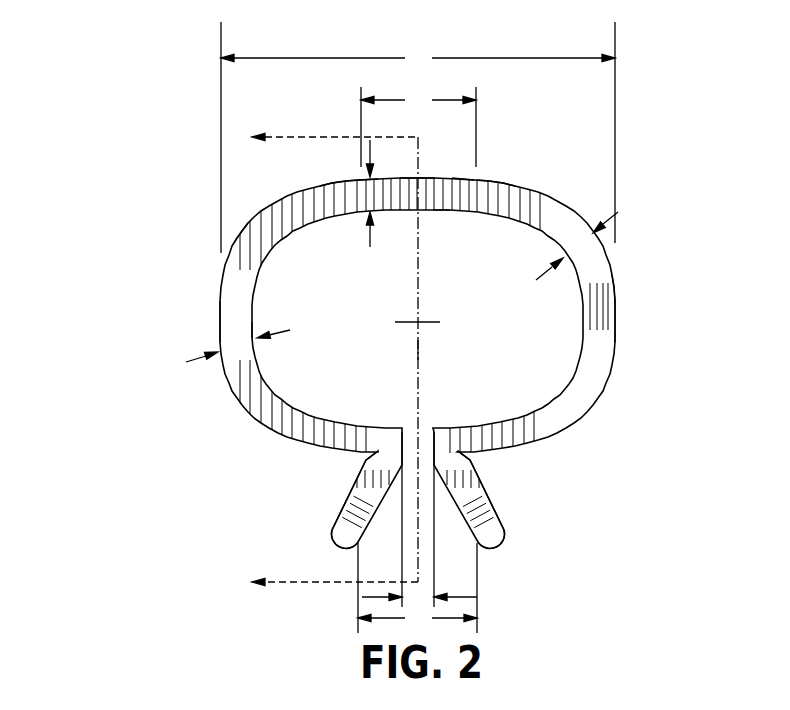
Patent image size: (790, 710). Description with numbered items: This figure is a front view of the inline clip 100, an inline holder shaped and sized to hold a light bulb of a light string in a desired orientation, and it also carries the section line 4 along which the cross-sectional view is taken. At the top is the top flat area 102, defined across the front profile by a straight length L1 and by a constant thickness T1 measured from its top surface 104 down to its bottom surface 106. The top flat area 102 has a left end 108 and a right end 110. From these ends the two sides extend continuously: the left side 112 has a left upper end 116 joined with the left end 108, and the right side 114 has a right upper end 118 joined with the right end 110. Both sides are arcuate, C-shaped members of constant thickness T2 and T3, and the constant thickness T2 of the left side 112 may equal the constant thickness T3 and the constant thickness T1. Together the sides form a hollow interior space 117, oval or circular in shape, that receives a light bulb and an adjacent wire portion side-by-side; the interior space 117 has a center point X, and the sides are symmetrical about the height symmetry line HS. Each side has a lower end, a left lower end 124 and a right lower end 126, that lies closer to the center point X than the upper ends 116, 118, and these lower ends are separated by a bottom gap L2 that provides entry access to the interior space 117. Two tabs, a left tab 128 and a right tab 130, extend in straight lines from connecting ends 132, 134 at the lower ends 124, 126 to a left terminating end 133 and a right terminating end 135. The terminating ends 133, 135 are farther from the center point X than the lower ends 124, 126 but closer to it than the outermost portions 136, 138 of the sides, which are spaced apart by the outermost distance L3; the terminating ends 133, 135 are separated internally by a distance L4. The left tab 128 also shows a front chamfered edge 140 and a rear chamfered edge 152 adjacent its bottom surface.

The inline clip 100 is at (100, 96).
The top flat area 102 is at (433, 164).
The top surface 104 is at (453, 177).
The bottom surface 106 is at (442, 212).
The left end 108 is at (360, 177).
The right end 110 is at (480, 177).
The left side 112 is at (235, 297).
The right side 114 is at (603, 290).
The left upper end 116 is at (357, 176).
The hollow interior space 117 is at (348, 330).
The right upper end 118 is at (485, 178).
The left lower end 124 is at (364, 447).
The right lower end 126 is at (472, 447).
The left tab 128 is at (360, 490).
The right tab 130 is at (476, 490).
The connecting end 132 is at (397, 423).
The connecting end 134 is at (437, 423).
The left terminating end 133 is at (340, 545).
The right terminating end 135 is at (498, 546).
The outermost portion 136 is at (220, 322).
The outermost portion 138 is at (617, 313).
The front chamfered edge 140 is at (344, 526).
The rear chamfered edge 152 is at (492, 526).
The section line 4- 4 is at (323, 360).
The straight length L1 is at (418, 127).
The bottom gap L2 is at (467, 596).
The outermost distance L3 is at (418, 137).
The distance L4 is at (417, 549).
The constant thickness T1 is at (369, 247).
The constant thickness T2 is at (186, 362).
The constant thickness T3 is at (547, 274).
The center point X is at (428, 318).
The height symmetry line HS is at (420, 349).